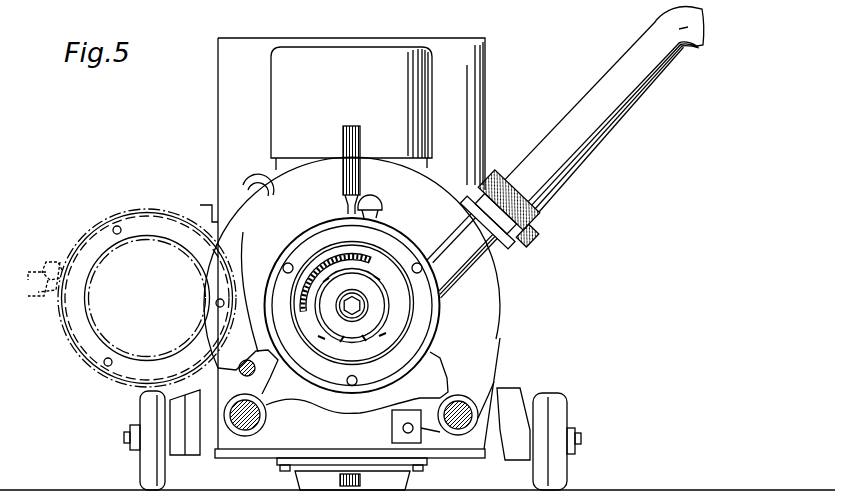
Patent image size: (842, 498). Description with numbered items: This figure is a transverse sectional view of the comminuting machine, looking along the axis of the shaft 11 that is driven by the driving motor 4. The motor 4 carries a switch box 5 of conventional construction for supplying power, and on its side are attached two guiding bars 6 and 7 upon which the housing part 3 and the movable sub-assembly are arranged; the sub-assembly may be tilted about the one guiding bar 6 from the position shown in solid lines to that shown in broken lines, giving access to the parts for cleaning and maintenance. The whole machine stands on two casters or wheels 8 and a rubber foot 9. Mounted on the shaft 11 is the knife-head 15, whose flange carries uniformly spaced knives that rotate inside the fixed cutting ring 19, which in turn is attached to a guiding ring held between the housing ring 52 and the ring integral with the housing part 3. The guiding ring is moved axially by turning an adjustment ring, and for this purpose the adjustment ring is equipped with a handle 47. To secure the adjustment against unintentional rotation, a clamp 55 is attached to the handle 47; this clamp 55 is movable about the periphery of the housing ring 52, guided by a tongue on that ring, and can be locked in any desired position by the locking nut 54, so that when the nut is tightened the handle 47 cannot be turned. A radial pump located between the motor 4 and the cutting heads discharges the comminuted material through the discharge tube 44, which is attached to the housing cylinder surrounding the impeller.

The housing part 3 is at (72, 354).
The driving motor 4 is at (498, 343).
The switch box 5 is at (485, 96).
The guiding bar 6 is at (268, 422).
The guiding bar 7 is at (464, 410).
The casters or wheels 8 is at (148, 408).
The rubber foot 9 is at (408, 484).
The shaft 11 is at (356, 314).
The knife-head 15 is at (382, 275).
The fixed cutting ring 19 is at (325, 263).
The discharge tube 44 is at (602, 125).
The handle 47 is at (359, 140).
The housing ring 52 is at (443, 313).
The locking nut 54 is at (372, 198).
The clamp 55 is at (386, 220).